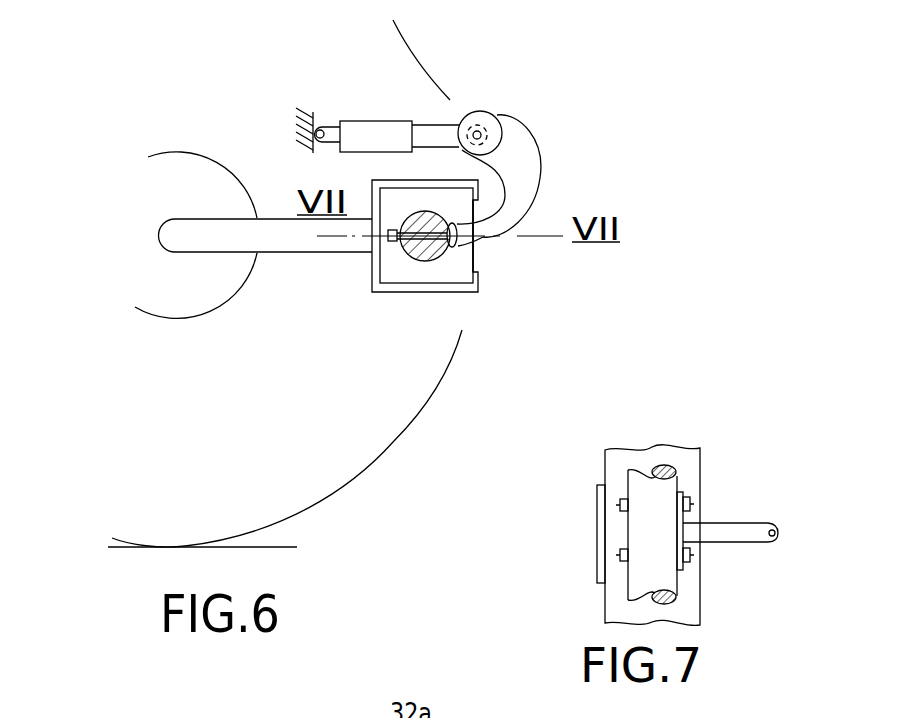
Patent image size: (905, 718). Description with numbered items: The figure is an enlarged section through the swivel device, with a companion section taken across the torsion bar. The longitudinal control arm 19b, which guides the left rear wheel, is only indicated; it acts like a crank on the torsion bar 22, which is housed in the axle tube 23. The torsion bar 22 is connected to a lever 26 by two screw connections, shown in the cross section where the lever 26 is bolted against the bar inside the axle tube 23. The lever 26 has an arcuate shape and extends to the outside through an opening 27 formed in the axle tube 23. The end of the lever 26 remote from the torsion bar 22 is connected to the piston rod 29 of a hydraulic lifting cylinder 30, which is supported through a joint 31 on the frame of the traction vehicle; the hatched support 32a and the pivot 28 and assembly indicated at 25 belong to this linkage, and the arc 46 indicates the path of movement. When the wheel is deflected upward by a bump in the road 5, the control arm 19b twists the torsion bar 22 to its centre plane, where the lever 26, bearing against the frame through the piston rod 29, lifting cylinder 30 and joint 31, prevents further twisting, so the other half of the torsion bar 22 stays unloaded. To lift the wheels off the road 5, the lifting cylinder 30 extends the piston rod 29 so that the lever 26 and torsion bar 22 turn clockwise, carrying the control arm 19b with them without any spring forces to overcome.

In FIG. 6, the road 5 is at (263, 548).
In FIG. 6, the longitudinal control arm 19b is at (258, 223).
In FIG. 6, the torsion bar 22 is at (413, 252).
In FIG. 7, the torsion bar 22 is at (638, 492).
In FIG. 6, the axle tube 23 is at (453, 287).
In FIG. 7, the axle tube 23 is at (702, 477).
In FIG. 6, the actuator assembly 25 is at (404, 87).
In FIG. 6, the lever 26 is at (528, 192).
In FIG. 7, the lever 26 is at (758, 536).
In FIG. 6, the opening 27 is at (477, 260).
In FIG. 6, the roller pin 28 is at (481, 128).
In FIG. 6, the piston rod 29 is at (432, 125).
In FIG. 6, the hydraulic lifting cylinder 30 is at (377, 128).
In FIG. 6, the joint 31 is at (327, 125).
In FIG. 6, the fixed support 32a is at (313, 113).
In FIG. 6, the arcuate path 46 is at (307, 492).